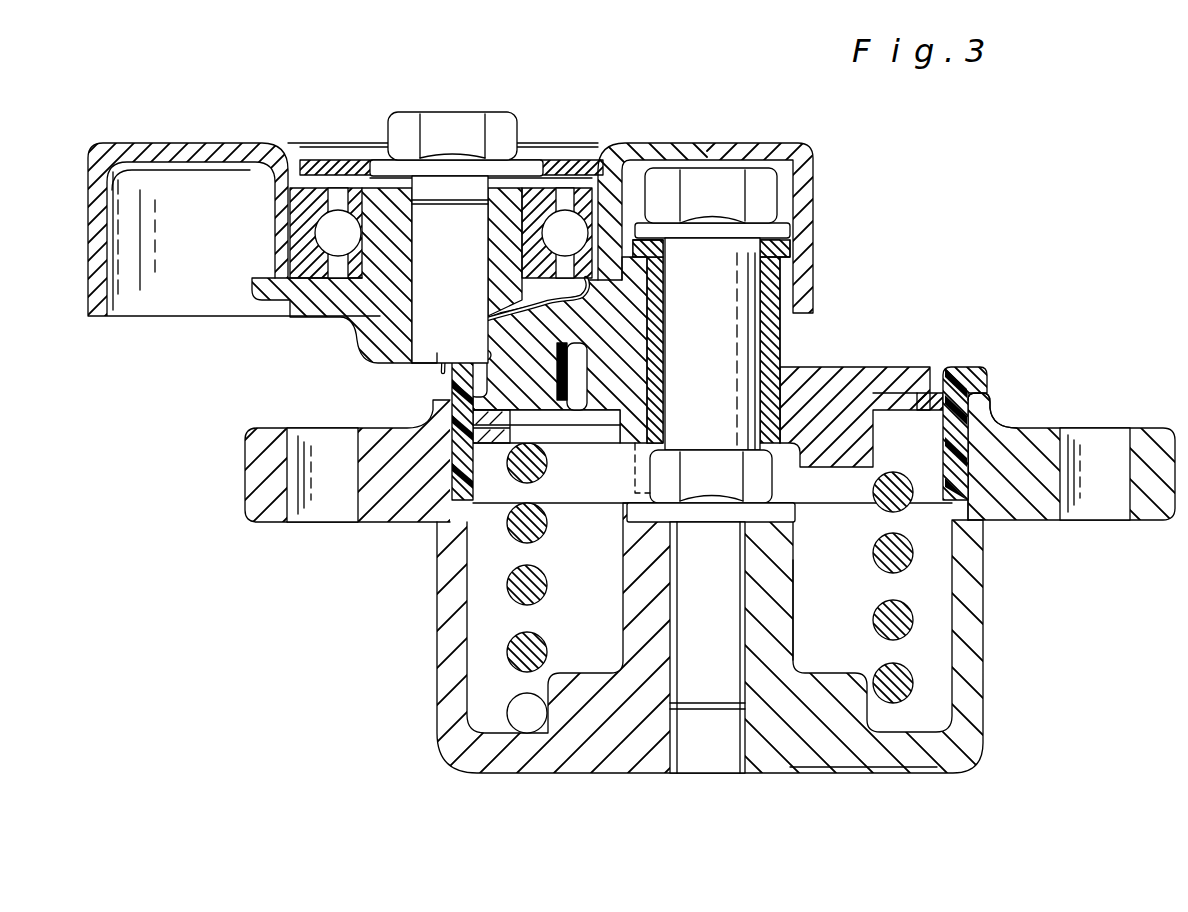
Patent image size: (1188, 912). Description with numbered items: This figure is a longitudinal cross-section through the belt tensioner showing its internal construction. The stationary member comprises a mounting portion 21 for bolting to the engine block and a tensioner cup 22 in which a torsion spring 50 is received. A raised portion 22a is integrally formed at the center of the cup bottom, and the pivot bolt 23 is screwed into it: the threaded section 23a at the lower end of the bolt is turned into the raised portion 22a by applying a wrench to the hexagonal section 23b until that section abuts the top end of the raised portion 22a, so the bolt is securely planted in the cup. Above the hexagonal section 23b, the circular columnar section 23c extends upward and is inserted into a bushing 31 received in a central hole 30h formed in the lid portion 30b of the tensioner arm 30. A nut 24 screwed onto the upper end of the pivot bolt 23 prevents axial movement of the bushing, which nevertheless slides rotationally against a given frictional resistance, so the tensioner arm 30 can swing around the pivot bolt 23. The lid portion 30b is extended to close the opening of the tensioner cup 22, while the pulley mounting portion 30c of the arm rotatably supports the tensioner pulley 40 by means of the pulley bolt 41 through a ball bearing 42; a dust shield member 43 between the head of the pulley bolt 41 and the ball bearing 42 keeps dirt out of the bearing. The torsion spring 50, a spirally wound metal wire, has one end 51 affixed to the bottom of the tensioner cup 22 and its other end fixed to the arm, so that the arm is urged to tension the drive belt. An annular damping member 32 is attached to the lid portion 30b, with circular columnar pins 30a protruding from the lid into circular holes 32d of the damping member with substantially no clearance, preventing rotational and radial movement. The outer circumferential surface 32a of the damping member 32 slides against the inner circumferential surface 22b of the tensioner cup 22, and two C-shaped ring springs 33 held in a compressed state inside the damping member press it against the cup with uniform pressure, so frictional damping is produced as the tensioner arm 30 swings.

The mounting portion 21 is at (1150, 515).
The tensioner cup 22 is at (716, 608).
The raised portion 22a is at (778, 636).
The inner circumferential surface 22b is at (972, 447).
The pivot bolt 23 is at (729, 529).
The threaded section 23a is at (710, 687).
The hexagonal section 23b is at (757, 484).
The circular columnar section 23c is at (737, 310).
The nut 24 is at (713, 200).
The tensioner arm 30 is at (517, 305).
The circular columnar pins 30a is at (452, 386).
The lid portion 30b is at (833, 385).
The pulley mounting portion 30c is at (373, 330).
The central hole 30h is at (760, 272).
The bushing 31 is at (760, 323).
The damping member 32 is at (700, 389).
The outer circumferential surface 32a is at (980, 420).
The circular holes 32d is at (468, 385).
The C-shaped ring springs 33 is at (933, 393).
The tensioner pulley 40 is at (132, 307).
The pulley bolt 41 is at (455, 115).
The ball bearing 42 is at (327, 224).
The dust shield member 43 is at (328, 167).
The torsion spring 50 is at (918, 567).
The one end of the torsion spring 51 is at (530, 720).